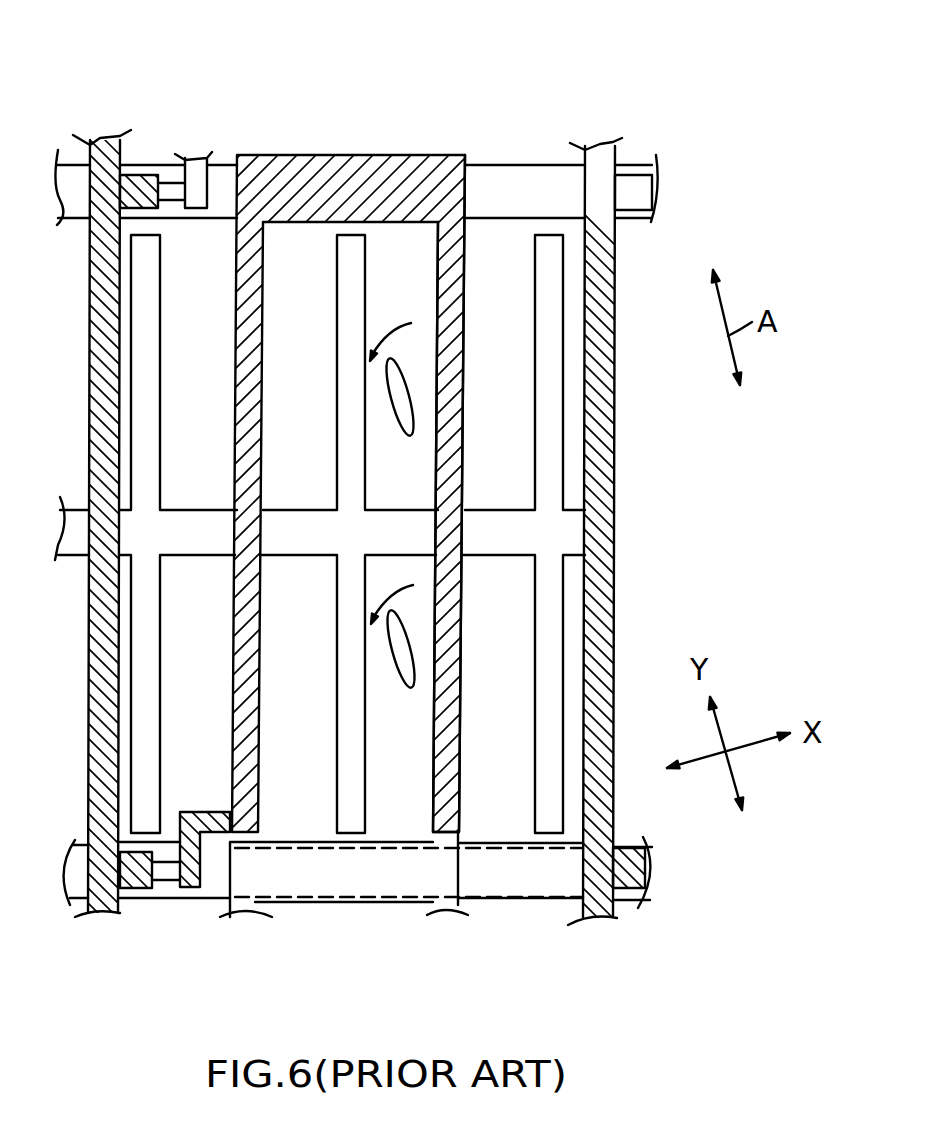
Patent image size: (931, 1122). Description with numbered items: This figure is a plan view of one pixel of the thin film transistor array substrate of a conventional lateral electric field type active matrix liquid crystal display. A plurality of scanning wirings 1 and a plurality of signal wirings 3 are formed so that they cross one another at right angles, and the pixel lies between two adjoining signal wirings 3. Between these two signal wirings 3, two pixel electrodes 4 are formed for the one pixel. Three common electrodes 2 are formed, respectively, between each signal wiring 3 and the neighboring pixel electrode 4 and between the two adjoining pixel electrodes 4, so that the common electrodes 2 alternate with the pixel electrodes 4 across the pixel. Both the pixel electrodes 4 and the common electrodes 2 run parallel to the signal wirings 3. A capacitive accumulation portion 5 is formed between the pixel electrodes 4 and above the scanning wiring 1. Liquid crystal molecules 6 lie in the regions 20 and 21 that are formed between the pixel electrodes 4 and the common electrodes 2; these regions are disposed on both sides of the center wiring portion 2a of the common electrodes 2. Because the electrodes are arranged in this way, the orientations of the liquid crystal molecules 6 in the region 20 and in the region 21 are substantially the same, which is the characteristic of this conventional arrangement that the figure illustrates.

The scanning wiring 1 is at (495, 877).
The common electrode 2 is at (550, 248).
The center wiring portion 2a is at (548, 535).
The signal wiring 3 is at (107, 907).
The pixel electrode 4 is at (438, 810).
The capacitive accumulation portion 5 is at (358, 154).
The liquid crystal molecule 6 is at (407, 410).
The region 20 is at (417, 250).
The region 21 is at (380, 780).